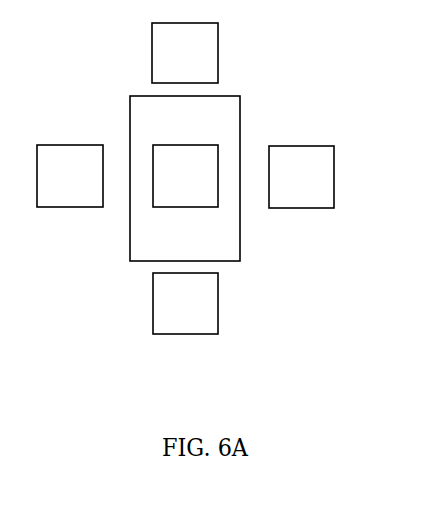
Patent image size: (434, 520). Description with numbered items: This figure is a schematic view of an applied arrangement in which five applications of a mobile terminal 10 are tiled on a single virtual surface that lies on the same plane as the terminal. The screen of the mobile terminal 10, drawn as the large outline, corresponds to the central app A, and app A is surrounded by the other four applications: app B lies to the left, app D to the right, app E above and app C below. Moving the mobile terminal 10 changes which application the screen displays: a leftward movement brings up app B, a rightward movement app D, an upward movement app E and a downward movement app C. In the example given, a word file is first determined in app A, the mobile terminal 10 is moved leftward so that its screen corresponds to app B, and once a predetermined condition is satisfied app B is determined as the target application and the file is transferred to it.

The mobile terminal 10 is at (240, 96).
The app A is at (185, 176).
The app B is at (70, 176).
The app C is at (185, 303).
The app D is at (301, 177).
The app E is at (185, 53).